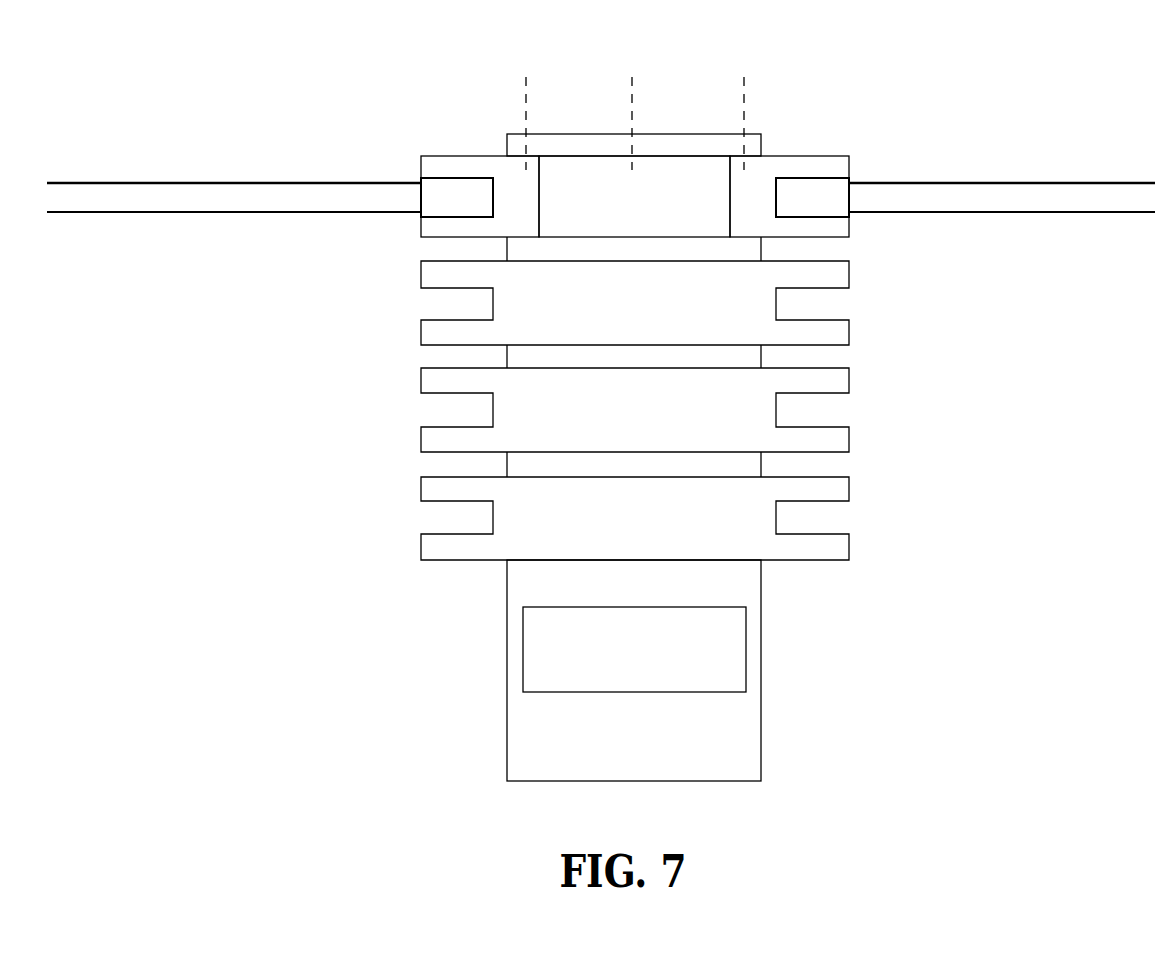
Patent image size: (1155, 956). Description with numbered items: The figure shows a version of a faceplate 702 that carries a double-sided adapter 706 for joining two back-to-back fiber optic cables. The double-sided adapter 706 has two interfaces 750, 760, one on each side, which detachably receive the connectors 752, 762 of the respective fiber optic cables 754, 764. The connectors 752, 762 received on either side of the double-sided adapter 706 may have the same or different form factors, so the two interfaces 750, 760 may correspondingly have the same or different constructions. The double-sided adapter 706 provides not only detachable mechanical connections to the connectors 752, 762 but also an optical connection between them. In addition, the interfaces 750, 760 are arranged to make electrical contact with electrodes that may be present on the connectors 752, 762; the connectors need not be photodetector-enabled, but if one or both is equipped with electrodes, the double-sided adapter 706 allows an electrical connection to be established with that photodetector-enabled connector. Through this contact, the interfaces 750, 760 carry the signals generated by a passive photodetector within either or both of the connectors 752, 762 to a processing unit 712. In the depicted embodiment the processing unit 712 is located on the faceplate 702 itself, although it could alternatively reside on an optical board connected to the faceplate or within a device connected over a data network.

The faceplate 702 is at (612, 764).
The double-sided adapter 706 is at (503, 68).
The processing unit 712 is at (612, 664).
The interface 750 is at (453, 217).
The connector 752 is at (451, 188).
The fiber optic cable 754 is at (229, 196).
The interface 760 is at (822, 217).
The connector 762 is at (826, 188).
The fiber optic cable 764 is at (1046, 196).